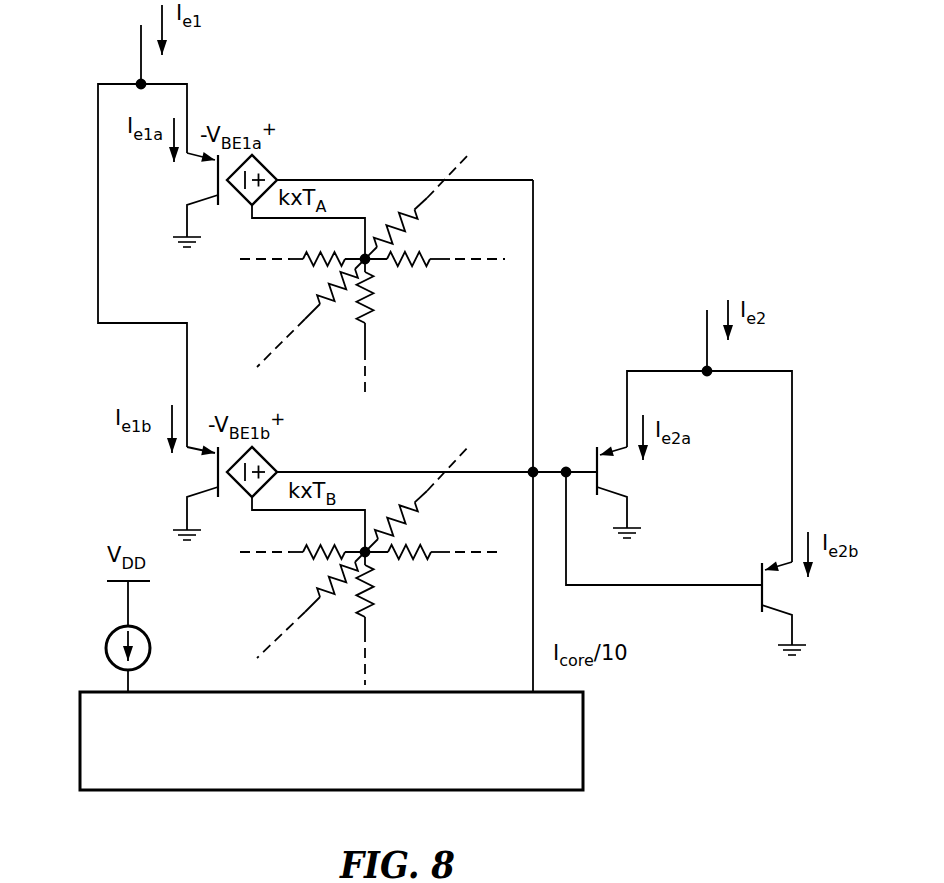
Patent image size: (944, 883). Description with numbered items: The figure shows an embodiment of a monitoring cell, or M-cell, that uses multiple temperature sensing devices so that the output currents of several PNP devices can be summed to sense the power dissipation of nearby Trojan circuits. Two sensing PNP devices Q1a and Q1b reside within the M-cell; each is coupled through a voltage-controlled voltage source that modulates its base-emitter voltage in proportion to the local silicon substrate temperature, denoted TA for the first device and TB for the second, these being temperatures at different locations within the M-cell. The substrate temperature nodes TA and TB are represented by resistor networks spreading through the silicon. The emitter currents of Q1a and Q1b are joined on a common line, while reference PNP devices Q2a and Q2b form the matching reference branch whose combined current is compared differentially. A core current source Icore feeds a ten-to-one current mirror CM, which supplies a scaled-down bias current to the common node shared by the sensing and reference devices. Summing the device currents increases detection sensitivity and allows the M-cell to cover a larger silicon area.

The sensing PNP device Q1a is at (178, 200).
The sensing PNP device Q1b is at (178, 493).
The reference PNP device Q2a is at (644, 492).
The reference PNP device Q2b is at (809, 608).
The substrate temperature node TA is at (372, 275).
The substrate temperature node TB is at (371, 565).
The core current source Icore is at (99, 636).
The current mirror CM is at (331, 741).